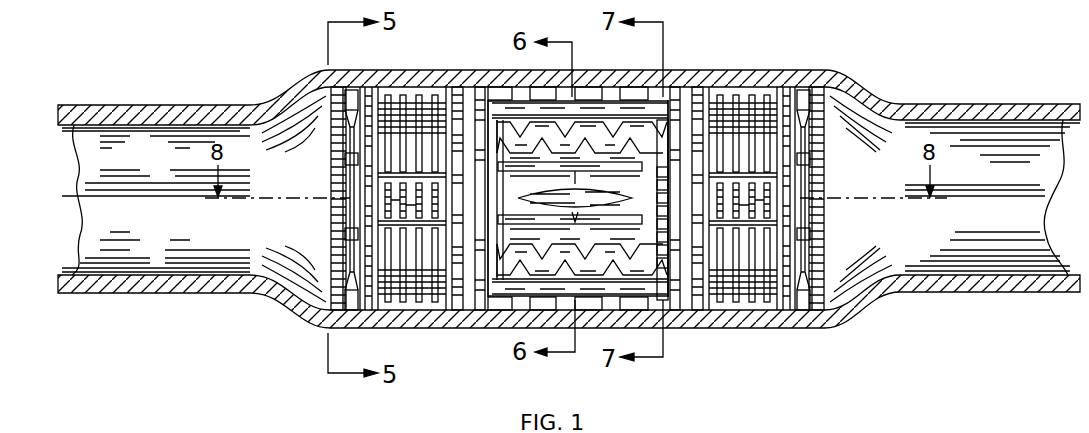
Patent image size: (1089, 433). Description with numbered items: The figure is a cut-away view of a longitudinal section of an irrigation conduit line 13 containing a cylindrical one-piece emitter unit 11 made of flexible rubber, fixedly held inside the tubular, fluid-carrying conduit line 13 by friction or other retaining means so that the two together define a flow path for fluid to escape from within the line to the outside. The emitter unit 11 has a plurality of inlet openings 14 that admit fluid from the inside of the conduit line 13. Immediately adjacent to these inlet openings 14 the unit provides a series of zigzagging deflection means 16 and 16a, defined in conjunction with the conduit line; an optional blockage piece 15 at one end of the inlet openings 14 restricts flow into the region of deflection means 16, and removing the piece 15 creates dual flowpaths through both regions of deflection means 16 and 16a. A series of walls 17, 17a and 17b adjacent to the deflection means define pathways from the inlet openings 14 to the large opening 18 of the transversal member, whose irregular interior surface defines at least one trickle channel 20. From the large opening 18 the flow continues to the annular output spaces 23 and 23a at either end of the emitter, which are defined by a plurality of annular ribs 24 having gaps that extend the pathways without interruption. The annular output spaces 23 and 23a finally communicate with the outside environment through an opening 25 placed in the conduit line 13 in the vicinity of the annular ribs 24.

The emitter unit 11 is at (318, 158).
The conduit line 13 is at (198, 108).
The inlet openings 14 is at (663, 233).
The blockage piece 15 is at (655, 160).
The zigzagging deflection means 16 is at (470, 312).
The zigzagging deflection means 16a is at (512, 111).
The wall 17 is at (548, 232).
The wall 17a is at (525, 160).
The wall 17b is at (508, 188).
The large opening 18 is at (595, 197).
The trickle channel 20 is at (573, 214).
The annular output space 23 is at (777, 100).
The annular output space 23a is at (378, 95).
The annular ribs 24 is at (403, 105).
The opening 25 is at (385, 204).